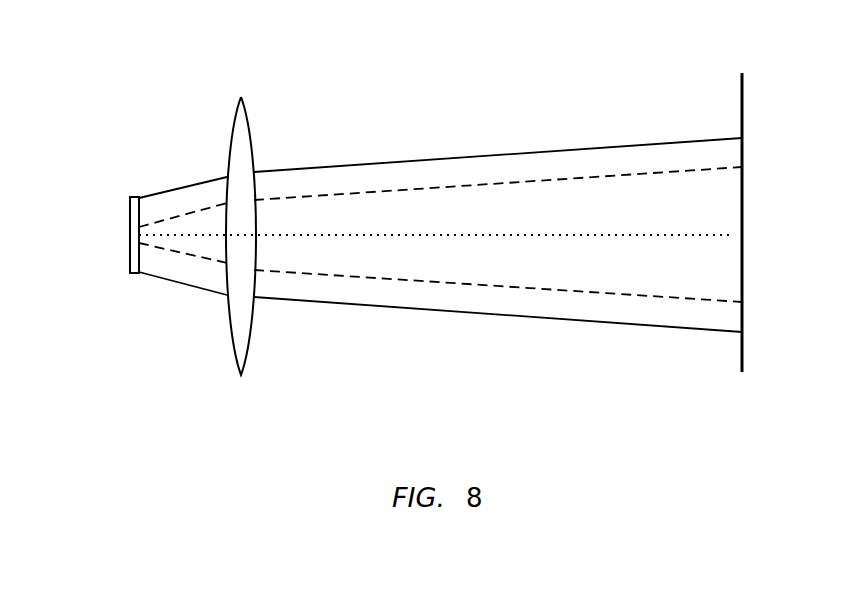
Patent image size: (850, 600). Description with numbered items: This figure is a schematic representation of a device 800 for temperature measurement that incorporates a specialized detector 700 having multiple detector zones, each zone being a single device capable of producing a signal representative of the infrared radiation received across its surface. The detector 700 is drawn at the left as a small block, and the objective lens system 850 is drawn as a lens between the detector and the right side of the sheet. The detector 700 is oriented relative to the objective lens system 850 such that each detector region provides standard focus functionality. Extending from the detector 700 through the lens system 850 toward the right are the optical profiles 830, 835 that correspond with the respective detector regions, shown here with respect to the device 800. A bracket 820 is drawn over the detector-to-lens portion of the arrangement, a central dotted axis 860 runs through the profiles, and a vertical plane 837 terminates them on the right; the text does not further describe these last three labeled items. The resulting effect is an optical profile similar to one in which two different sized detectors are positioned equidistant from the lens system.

The detector 700 is at (130, 232).
The device 800 is at (257, 387).
The beam-shaping section 820 is at (257, 84).
The optical profile 830 is at (358, 196).
The optical profile 835 is at (535, 152).
The target plane / screen 837 is at (745, 98).
The objective lens system 850 is at (243, 121).
The optical axis 860 is at (712, 235).